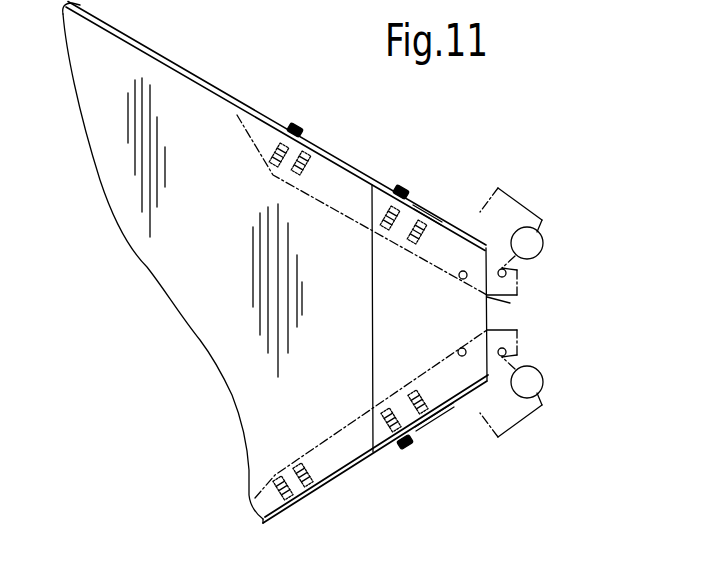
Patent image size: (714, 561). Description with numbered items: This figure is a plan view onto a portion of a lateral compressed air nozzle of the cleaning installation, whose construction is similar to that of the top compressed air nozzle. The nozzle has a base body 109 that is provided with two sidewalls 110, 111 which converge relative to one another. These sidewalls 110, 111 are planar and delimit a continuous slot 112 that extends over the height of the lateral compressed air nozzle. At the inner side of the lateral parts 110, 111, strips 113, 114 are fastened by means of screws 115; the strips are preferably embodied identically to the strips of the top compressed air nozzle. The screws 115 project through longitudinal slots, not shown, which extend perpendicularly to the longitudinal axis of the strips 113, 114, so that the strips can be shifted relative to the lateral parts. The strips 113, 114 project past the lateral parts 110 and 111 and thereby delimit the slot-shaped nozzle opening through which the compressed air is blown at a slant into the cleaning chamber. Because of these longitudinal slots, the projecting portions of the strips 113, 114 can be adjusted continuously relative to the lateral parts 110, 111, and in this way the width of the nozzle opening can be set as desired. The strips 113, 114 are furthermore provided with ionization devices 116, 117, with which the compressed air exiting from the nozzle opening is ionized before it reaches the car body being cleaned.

The base body 109 is at (175, 63).
The sidewall 110 is at (238, 115).
The sidewall 111 is at (368, 452).
The continuous slot 112 is at (487, 320).
The strip 113 is at (440, 250).
The strip 114 is at (447, 387).
The screws 115 is at (299, 138).
The ionization device 116 is at (503, 215).
The ionization device 117 is at (538, 383).